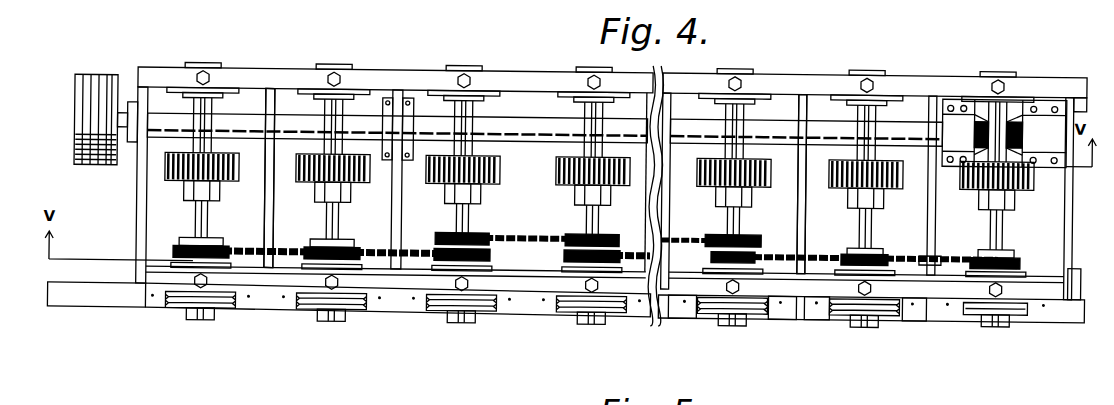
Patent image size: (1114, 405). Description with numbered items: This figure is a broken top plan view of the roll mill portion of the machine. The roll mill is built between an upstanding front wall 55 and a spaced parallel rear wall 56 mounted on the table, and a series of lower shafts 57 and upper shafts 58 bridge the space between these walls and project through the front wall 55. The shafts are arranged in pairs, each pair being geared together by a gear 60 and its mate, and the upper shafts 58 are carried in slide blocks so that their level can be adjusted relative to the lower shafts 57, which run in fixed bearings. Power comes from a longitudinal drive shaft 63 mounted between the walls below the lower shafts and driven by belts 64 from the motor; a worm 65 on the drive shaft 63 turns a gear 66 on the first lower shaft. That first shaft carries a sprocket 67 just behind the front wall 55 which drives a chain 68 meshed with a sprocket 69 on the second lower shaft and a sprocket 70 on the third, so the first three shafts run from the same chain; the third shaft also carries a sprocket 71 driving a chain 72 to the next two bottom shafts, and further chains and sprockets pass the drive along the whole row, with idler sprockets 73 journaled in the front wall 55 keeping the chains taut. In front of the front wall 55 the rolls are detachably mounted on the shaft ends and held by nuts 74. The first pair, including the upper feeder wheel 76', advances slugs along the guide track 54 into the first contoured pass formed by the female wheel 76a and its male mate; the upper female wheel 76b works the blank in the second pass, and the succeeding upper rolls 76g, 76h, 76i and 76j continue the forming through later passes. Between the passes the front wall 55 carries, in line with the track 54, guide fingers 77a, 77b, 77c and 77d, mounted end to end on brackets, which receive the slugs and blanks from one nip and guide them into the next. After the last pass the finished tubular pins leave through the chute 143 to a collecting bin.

The guide track 54 is at (1060, 310).
The front wall 55 is at (541, 287).
The rear wall 56 is at (531, 76).
The lower shafts 57 is at (212, 238).
The upper shafts 58 is at (473, 145).
The gear 60 is at (239, 171).
The longitudinal drive shaft 63 is at (243, 120).
The belts 64 is at (96, 122).
The worm 65 is at (1030, 100).
The gear 66 is at (969, 100).
The sprocket 67 is at (1021, 258).
The chain 68 is at (945, 256).
The sprocket 69 is at (884, 256).
The sprocket 70 is at (752, 256).
The sprocket 71 is at (756, 234).
The chain 72 is at (685, 238).
The idler sprockets 73 is at (283, 246).
The nuts 74 is at (741, 321).
The upper roll 76j is at (222, 310).
The upper roll 76i is at (352, 310).
The upper roll 76h is at (482, 312).
The upper roll 76g is at (612, 310).
The female wheel 76b is at (712, 312).
The female wheel 76a is at (886, 312).
The feeder wheel 76' is at (995, 334).
The guide finger 77a is at (918, 313).
The guide fingers 77b is at (816, 313).
The guide finger 77c is at (789, 313).
The guide finger 77d is at (686, 313).
The chute 143 is at (120, 306).